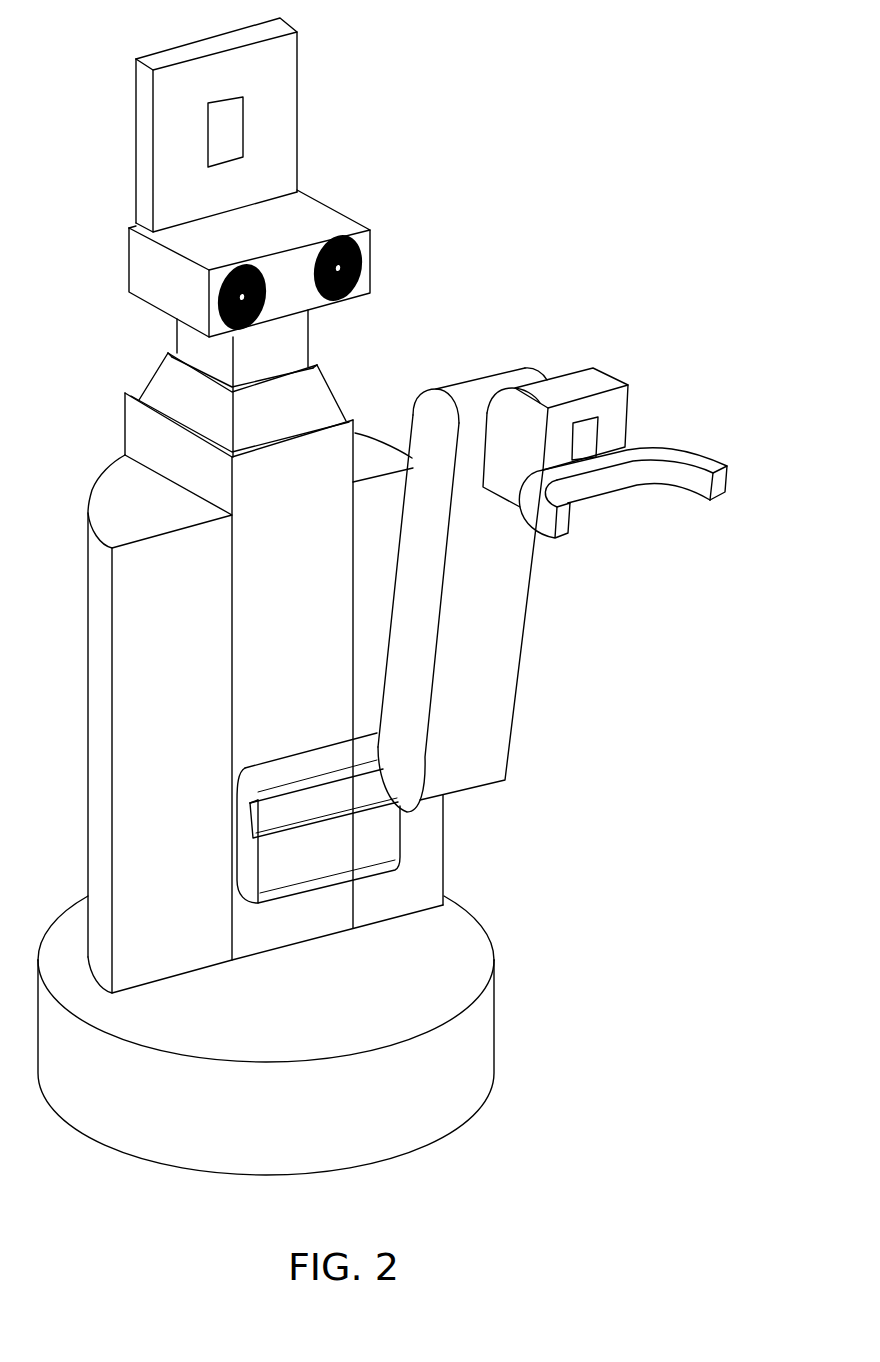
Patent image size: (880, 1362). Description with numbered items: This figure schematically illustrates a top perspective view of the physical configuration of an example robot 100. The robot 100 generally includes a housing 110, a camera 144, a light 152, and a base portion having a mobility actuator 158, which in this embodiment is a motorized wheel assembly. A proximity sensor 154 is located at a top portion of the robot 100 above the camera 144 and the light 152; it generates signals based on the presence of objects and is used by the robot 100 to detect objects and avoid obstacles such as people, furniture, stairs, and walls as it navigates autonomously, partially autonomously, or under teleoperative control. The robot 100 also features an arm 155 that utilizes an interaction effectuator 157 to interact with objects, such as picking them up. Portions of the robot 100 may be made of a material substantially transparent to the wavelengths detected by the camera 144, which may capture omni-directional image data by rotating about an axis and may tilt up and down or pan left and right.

The robot 100 is at (638, 118).
The housing 110 is at (248, 567).
The camera 144 is at (245, 279).
The light 152 is at (352, 268).
The proximity sensor 154 is at (227, 108).
The arm 155 is at (528, 625).
The interaction effectuator 157 is at (693, 447).
The mobility actuator 158 is at (494, 1022).